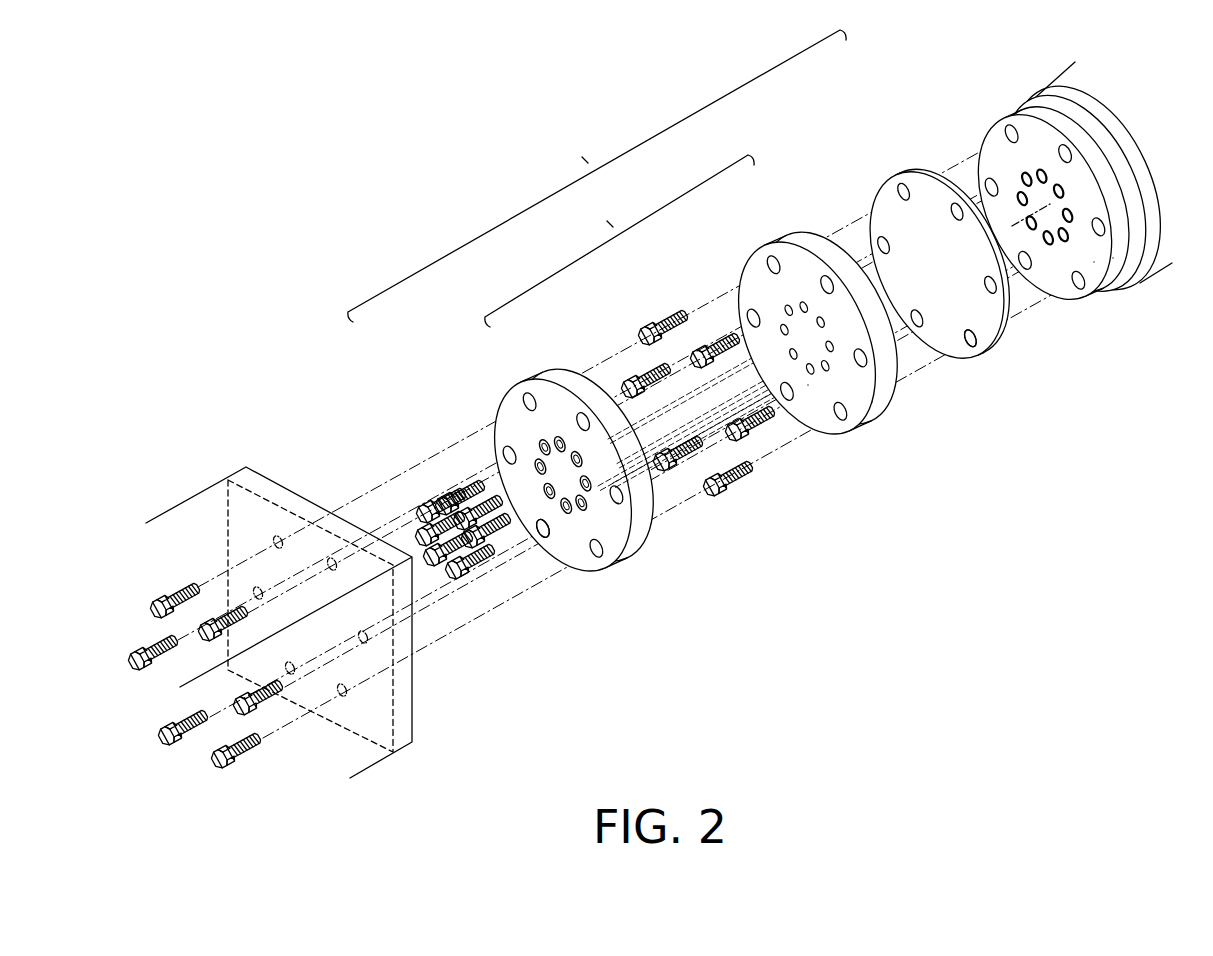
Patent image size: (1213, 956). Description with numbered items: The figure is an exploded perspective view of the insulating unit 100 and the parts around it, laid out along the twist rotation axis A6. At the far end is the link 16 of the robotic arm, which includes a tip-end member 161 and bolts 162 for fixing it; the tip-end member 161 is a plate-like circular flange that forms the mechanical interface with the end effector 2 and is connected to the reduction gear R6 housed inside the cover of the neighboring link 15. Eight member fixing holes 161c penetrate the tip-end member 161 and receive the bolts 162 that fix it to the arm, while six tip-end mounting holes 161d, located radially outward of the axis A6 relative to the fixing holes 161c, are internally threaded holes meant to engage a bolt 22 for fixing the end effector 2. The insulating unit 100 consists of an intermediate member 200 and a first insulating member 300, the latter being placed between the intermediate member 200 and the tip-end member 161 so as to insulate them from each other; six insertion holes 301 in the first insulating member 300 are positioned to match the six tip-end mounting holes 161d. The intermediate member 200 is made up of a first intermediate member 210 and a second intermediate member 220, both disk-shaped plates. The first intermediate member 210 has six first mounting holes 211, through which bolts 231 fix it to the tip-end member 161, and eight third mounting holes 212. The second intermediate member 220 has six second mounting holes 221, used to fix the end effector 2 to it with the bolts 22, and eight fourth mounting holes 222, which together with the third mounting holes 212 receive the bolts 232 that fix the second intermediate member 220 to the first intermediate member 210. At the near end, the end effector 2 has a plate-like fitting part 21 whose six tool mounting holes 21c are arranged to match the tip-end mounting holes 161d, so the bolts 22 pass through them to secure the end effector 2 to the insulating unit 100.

The end effector 2 is at (215, 482).
The fitting part 21 is at (255, 478).
The tool mounting holes 21c is at (279, 540).
The bolt 22 is at (178, 590).
The insulating unit 100 is at (597, 176).
The intermediate member 200 is at (619, 241).
The first intermediate member 210 is at (783, 242).
The first mounting holes 211 is at (868, 405).
The third mounting holes 212 is at (808, 386).
The second intermediate member 220 is at (535, 380).
The second mounting holes 221 is at (618, 505).
The fourth mounting holes 222 is at (548, 535).
The bolt 231 is at (733, 482).
The bolt 232 is at (488, 567).
The first insulating member 300 is at (918, 172).
The insertion holes 301 is at (970, 363).
The link 15 is at (1060, 63).
The link 16 is at (985, 111).
The tip-end member 161 is at (1130, 265).
The member fixing holes 161c is at (1113, 258).
The tip-end mounting holes 161d is at (1094, 262).
The bolt 162 is at (1048, 242).
The reduction gear R6 is at (1036, 96).
The twist rotation axis A6 is at (1013, 235).